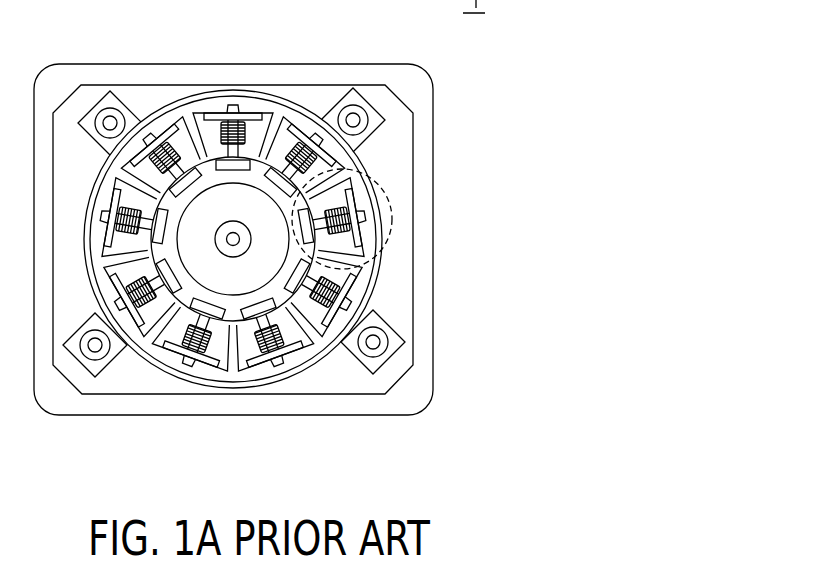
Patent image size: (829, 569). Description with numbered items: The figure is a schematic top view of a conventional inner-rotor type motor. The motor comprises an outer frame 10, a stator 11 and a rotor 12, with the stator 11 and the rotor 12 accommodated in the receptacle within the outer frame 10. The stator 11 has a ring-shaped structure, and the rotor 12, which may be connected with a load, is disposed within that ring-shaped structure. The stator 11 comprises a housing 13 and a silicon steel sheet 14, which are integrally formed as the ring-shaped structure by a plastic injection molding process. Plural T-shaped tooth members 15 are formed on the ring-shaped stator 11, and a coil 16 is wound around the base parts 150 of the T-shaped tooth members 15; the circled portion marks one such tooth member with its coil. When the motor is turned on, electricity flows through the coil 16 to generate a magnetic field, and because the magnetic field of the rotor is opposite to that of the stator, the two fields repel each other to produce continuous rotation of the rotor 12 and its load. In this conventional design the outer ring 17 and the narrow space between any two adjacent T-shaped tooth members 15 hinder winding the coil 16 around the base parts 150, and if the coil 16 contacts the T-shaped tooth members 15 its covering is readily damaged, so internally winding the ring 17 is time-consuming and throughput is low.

The outer frame 10 is at (148, 73).
The stator 11 is at (318, 198).
The rotor 12 is at (245, 260).
The housing 13 is at (265, 155).
The silicon steel sheet 14 is at (206, 162).
The T-shaped tooth member 15 is at (362, 216).
The coil 16 is at (338, 224).
The outer ring 17 is at (302, 118).
The base part 150 is at (350, 210).